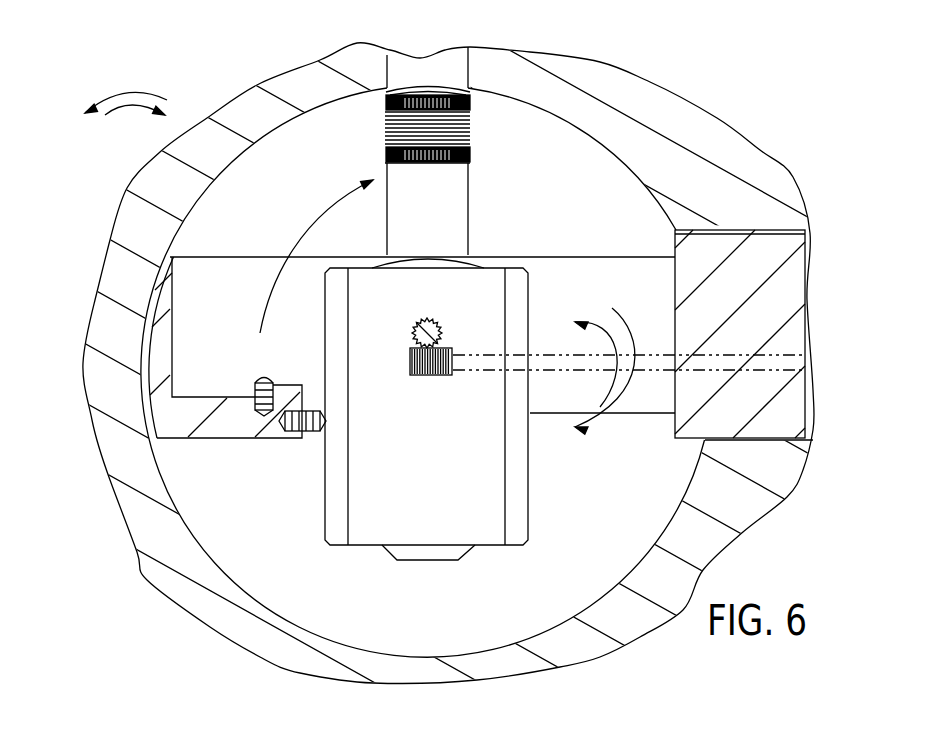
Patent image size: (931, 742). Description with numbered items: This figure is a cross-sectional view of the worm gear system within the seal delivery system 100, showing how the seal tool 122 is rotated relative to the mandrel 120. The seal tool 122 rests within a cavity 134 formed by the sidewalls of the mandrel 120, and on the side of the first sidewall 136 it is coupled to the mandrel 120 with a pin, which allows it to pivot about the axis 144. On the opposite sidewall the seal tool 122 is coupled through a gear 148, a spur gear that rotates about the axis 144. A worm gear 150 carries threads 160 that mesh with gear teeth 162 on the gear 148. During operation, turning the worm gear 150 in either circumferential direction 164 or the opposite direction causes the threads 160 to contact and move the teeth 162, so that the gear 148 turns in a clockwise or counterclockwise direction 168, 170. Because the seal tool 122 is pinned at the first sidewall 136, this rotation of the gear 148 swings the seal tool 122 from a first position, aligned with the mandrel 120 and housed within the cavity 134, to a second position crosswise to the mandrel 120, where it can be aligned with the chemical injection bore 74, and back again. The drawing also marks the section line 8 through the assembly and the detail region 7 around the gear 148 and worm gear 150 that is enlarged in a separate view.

The seal delivery system 100 is at (595, 560).
The mandrel 120 is at (765, 245).
The chemical injection bore 74 is at (403, 65).
The section line 8- 8 is at (427, 75).
The seal tool 122 is at (305, 493).
The cavity 134 is at (234, 300).
The first sidewall 136 is at (568, 252).
The gear 148 is at (412, 336).
The worm gear 150 is at (573, 368).
The axis 144 is at (437, 325).
The gear teeth 162 is at (426, 335).
The threads 160 is at (428, 377).
The circumferential direction 164 is at (600, 316).
The section line 7- 7 is at (485, 422).
The counterclockwise direction 170 is at (130, 89).
The clockwise direction 168 is at (127, 105).